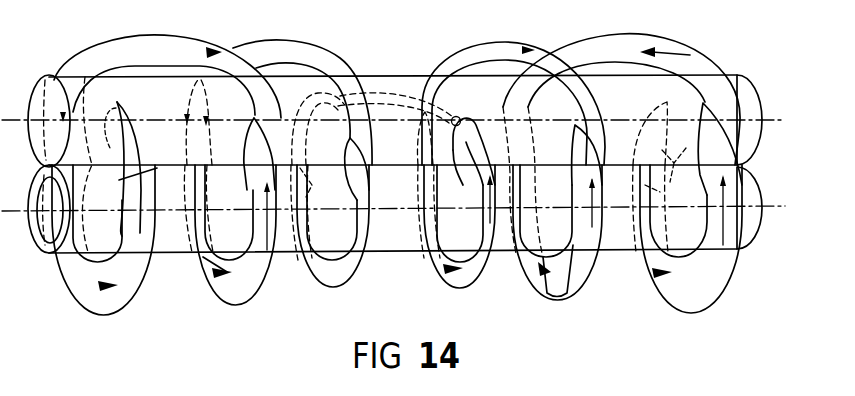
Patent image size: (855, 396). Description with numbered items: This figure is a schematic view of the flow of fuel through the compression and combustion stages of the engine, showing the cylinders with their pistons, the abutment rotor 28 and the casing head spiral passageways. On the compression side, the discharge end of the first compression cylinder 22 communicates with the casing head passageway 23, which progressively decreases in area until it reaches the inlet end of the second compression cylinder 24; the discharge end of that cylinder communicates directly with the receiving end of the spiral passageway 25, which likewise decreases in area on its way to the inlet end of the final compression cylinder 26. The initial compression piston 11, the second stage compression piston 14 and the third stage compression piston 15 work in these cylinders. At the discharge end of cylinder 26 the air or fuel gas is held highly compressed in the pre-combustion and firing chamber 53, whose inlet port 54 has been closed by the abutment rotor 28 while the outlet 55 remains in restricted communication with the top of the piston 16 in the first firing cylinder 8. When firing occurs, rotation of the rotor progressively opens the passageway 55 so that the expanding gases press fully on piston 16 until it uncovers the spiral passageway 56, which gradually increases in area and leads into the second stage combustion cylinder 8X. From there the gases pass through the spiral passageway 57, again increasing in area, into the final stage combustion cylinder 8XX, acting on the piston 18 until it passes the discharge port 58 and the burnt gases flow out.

The first stage combustion cylinder 8 is at (335, 285).
The second stage combustion cylinder 8X is at (248, 303).
The final stage combustion cylinder 8XX is at (128, 303).
The initial compression piston 11 is at (665, 168).
The second stage compression piston 14 is at (555, 271).
The third stage compression piston 15 is at (474, 151).
The first stage combustion-cylinder piston 16 is at (302, 185).
The third stage combustion piston 18 is at (137, 169).
The first compression cylinder 22 is at (697, 295).
The casing head passageway 23 is at (700, 58).
The second compression cylinder 24 is at (573, 303).
The spiral passageway 25 is at (529, 44).
The final compression cylinder 26 is at (458, 290).
The abutment rotor 28 is at (140, 133).
The pre-combustion and firing chamber 53 is at (388, 96).
The inlet port 54 is at (459, 116).
The outlet 55 is at (315, 152).
The spiral passageway 56 is at (335, 73).
The spiral passageway 57 is at (170, 40).
The discharge port 58 is at (108, 131).